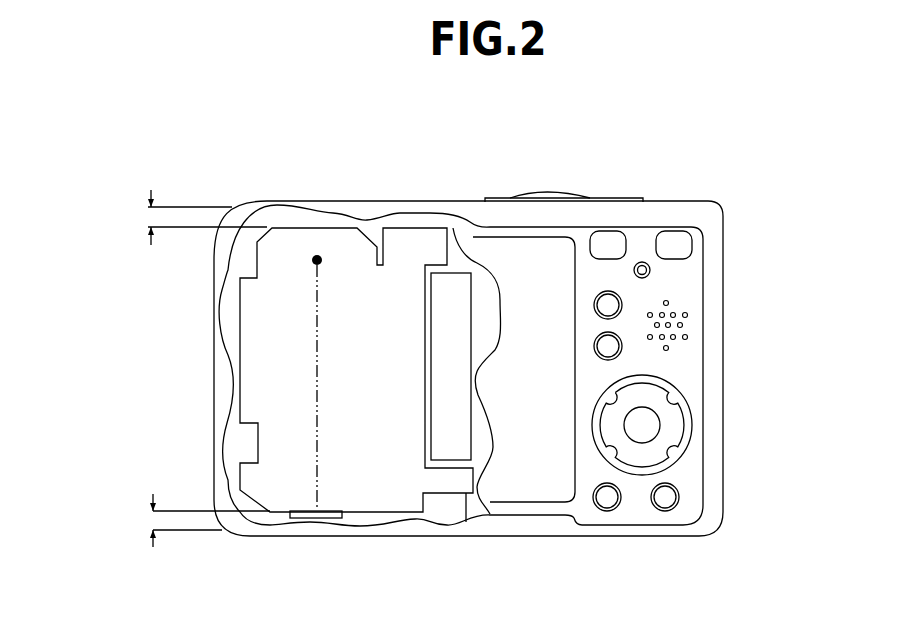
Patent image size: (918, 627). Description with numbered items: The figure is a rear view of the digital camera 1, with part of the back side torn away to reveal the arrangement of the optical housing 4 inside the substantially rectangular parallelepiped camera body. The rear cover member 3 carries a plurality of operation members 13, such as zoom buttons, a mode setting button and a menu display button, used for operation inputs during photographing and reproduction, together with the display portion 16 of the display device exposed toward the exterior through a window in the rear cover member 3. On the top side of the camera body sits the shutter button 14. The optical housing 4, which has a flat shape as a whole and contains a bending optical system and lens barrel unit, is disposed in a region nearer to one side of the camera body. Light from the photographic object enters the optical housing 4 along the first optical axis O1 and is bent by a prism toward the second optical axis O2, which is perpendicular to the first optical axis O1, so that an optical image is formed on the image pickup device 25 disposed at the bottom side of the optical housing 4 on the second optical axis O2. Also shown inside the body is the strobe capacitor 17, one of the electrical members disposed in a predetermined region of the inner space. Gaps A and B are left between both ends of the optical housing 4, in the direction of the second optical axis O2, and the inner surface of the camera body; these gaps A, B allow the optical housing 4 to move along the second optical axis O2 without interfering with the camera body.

The digital camera 1 is at (224, 172).
The rear cover member 3 is at (583, 493).
The optical housing 4 is at (339, 249).
The operation members 13 is at (615, 238).
The shutter button 14 is at (623, 197).
The display portion 16 is at (540, 279).
The strobe capacitor 17 is at (450, 299).
The image pickup device 25 is at (323, 523).
The first optical axis O1 is at (316, 259).
The second optical axis O2 is at (318, 377).
The gap A is at (197, 217).
The gap B is at (200, 520).